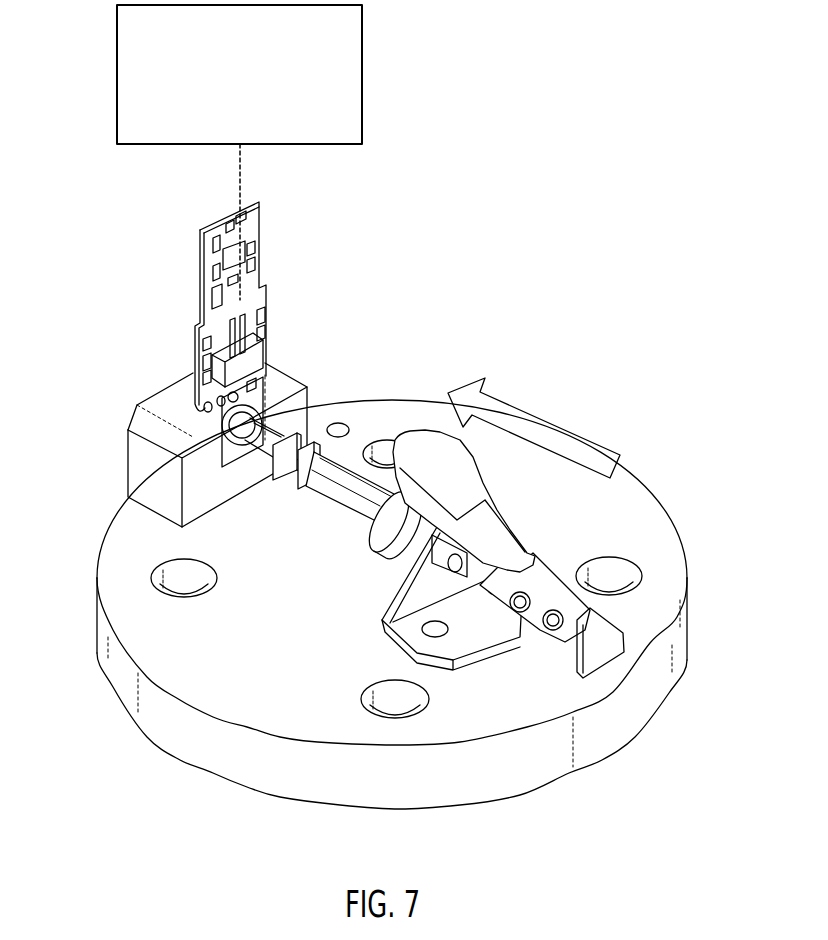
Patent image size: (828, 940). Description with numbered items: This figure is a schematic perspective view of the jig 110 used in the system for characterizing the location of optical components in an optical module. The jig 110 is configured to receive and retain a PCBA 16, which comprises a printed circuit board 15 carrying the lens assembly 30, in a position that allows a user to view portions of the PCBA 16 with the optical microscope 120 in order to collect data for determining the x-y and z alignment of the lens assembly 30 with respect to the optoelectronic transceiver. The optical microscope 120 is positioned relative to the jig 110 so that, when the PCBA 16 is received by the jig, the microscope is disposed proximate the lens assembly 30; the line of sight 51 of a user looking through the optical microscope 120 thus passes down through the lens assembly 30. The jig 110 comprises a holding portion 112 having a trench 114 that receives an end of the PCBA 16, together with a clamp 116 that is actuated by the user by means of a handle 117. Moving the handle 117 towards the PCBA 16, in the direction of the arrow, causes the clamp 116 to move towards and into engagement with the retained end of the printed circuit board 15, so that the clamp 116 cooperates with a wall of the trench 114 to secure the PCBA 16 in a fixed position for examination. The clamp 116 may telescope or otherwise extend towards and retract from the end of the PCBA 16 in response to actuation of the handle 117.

The printed circuit board 15 is at (247, 278).
The PCBA 16 is at (195, 268).
The lens assembly 30 is at (423, 483).
The line of sight 51 is at (240, 162).
The jig 110 is at (636, 316).
The holding portion 112 is at (318, 411).
The trench 114 is at (200, 369).
The clamp 116 is at (270, 427).
The handle 117 is at (460, 468).
The optical microscope 120 is at (348, 46).